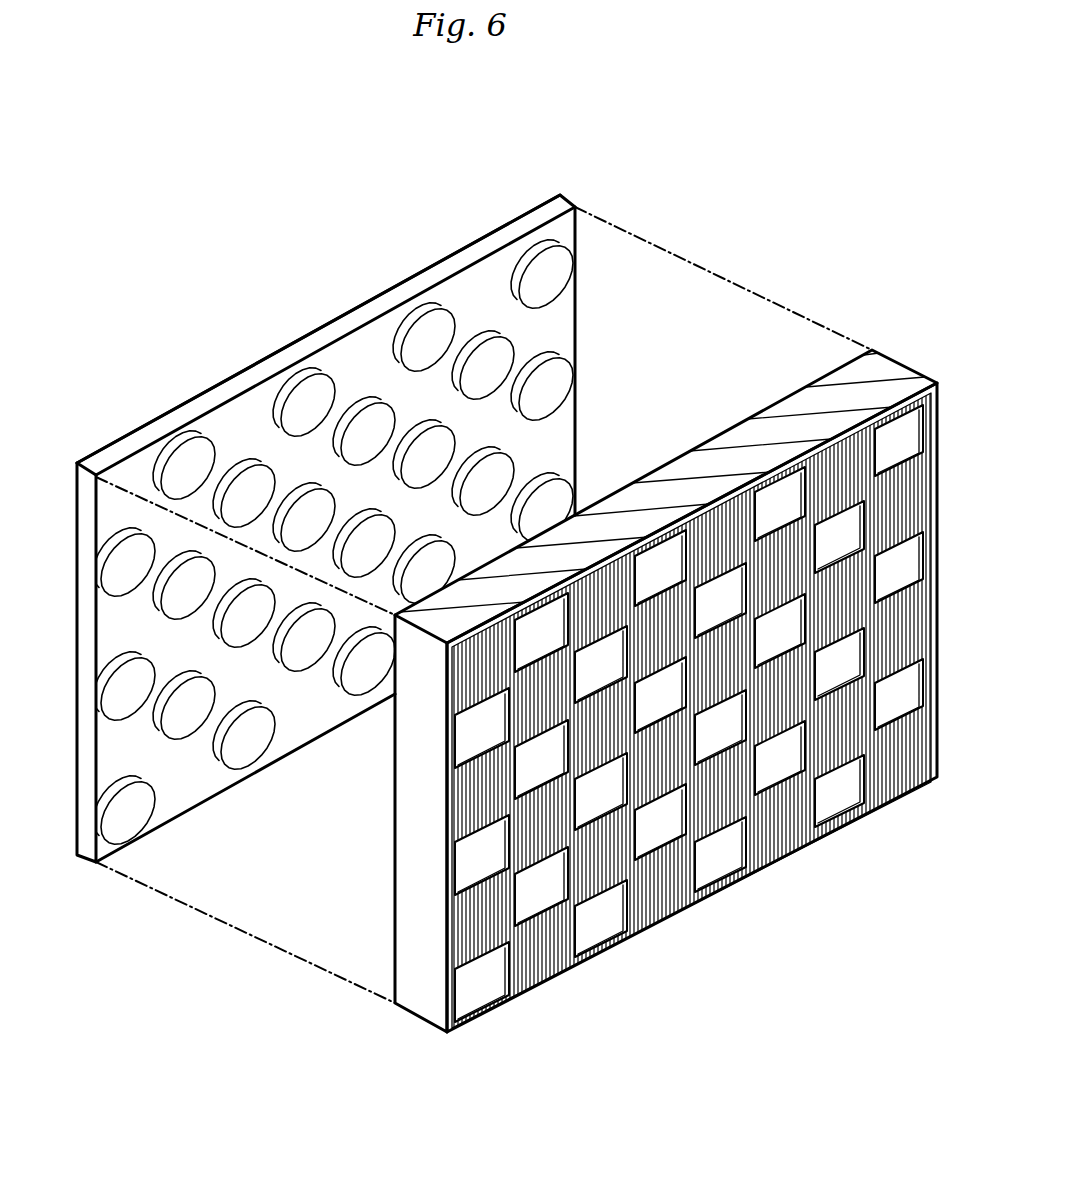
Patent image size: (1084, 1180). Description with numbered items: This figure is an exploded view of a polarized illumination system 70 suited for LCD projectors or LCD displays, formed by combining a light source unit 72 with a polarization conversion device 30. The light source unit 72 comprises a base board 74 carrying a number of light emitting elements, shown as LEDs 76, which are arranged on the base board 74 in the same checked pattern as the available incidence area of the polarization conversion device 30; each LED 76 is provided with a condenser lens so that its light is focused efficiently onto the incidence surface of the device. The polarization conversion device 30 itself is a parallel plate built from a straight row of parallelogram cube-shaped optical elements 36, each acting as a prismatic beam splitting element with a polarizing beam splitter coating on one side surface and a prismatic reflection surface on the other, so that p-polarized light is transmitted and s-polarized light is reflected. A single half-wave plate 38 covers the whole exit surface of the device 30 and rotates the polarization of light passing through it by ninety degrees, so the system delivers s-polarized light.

The polarization conversion device 30 is at (626, 737).
The parallelogram cube-shaped optical element 36 is at (715, 445).
The half-wave plate 38 is at (674, 906).
The polarized illumination system 70 is at (757, 243).
The light source unit 72 is at (335, 287).
The base board 74 is at (361, 528).
The LED 76 is at (292, 381).